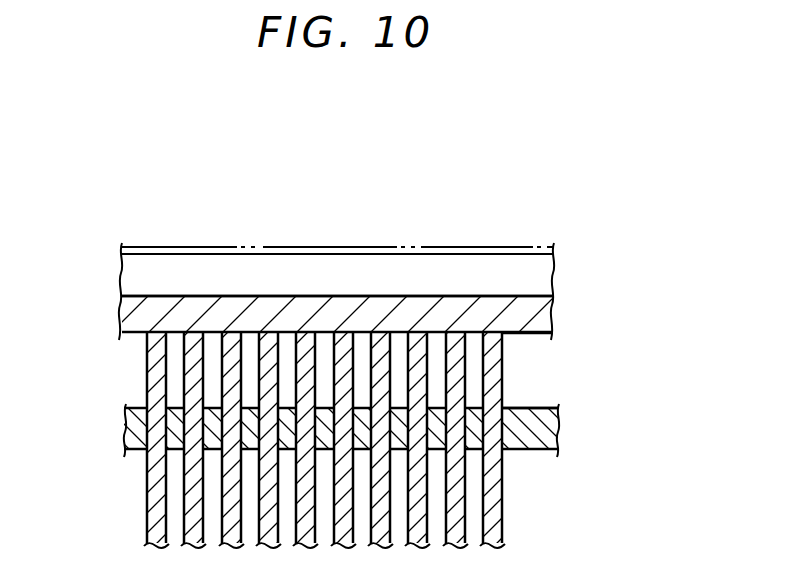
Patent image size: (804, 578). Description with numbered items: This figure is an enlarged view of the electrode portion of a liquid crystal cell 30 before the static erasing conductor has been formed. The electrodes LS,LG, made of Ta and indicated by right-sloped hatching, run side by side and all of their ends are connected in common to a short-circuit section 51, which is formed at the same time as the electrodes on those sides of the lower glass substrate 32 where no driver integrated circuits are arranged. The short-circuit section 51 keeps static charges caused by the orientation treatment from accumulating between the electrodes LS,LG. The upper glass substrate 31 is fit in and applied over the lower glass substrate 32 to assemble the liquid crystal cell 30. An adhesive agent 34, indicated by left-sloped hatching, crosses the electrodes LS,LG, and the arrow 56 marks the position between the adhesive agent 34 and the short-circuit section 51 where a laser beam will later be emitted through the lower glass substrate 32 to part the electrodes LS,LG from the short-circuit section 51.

The liquid crystal cell 30 is at (541, 157).
The upper glass substrate 31 is at (437, 247).
The lower glass substrate 32 is at (540, 273).
The short-circuit section 51 is at (542, 321).
The arrow 56 is at (527, 368).
The adhesive agent 34 is at (549, 428).
The electrodes LS,LG is at (412, 458).